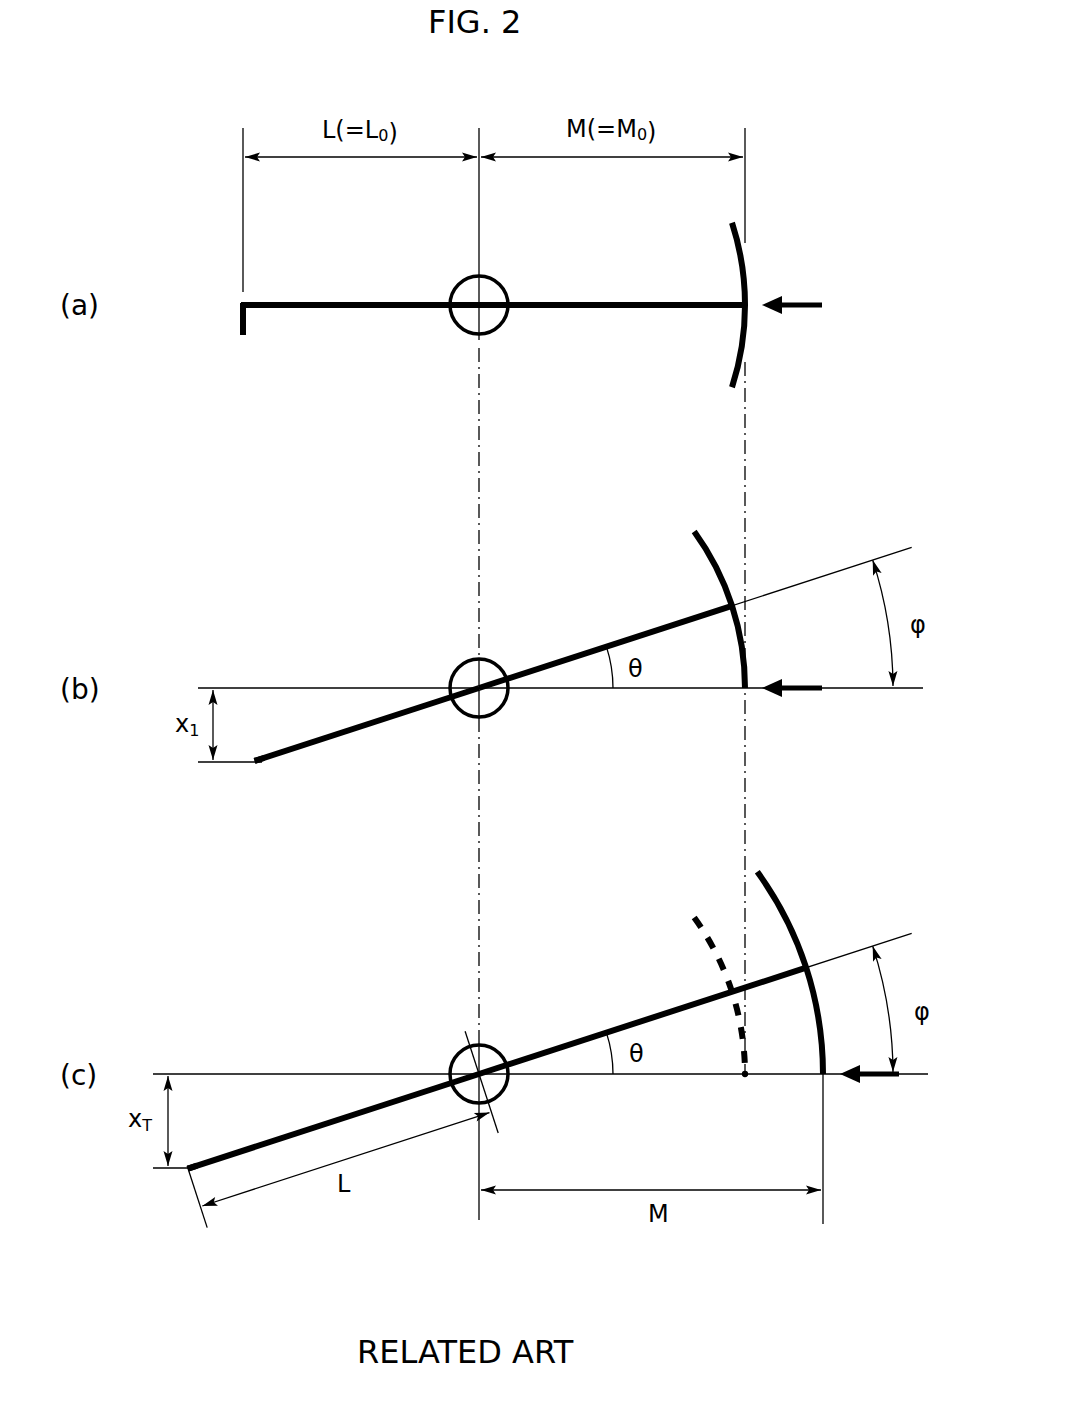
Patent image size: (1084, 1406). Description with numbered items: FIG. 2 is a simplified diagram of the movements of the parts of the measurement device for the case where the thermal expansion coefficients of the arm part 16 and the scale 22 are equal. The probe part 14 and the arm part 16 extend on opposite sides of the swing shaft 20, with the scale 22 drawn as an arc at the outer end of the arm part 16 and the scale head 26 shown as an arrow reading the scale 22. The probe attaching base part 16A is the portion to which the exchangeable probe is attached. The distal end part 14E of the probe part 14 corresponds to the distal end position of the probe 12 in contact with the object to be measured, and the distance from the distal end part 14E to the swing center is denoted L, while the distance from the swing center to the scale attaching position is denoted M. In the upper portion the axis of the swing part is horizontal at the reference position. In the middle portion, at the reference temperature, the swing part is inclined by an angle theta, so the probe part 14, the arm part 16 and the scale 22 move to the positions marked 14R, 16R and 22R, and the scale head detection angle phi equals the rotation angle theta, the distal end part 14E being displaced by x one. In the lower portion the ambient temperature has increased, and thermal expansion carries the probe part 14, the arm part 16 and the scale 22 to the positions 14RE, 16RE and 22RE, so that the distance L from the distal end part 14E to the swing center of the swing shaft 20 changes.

The probe 12 is at (245, 350).
The probe part 14 is at (333, 322).
The distal end part 14E is at (236, 290).
The probe part (inclined position) 14R is at (333, 750).
The probe part (inclined and thermally expanded position) 14RE is at (317, 1115).
The arm part 16 is at (583, 322).
The probe attaching base part 16A is at (760, 288).
The arm part (inclined position) 16R is at (583, 642).
The arm part (inclined and thermally expanded position) 16RE is at (777, 950).
The swing shaft 20 is at (465, 337).
The scale 22 is at (733, 393).
The scale (inclined position) 22R is at (687, 522).
The scale (inclined and thermally expanded position) 22RE is at (760, 867).
The scale head 26 is at (802, 322).